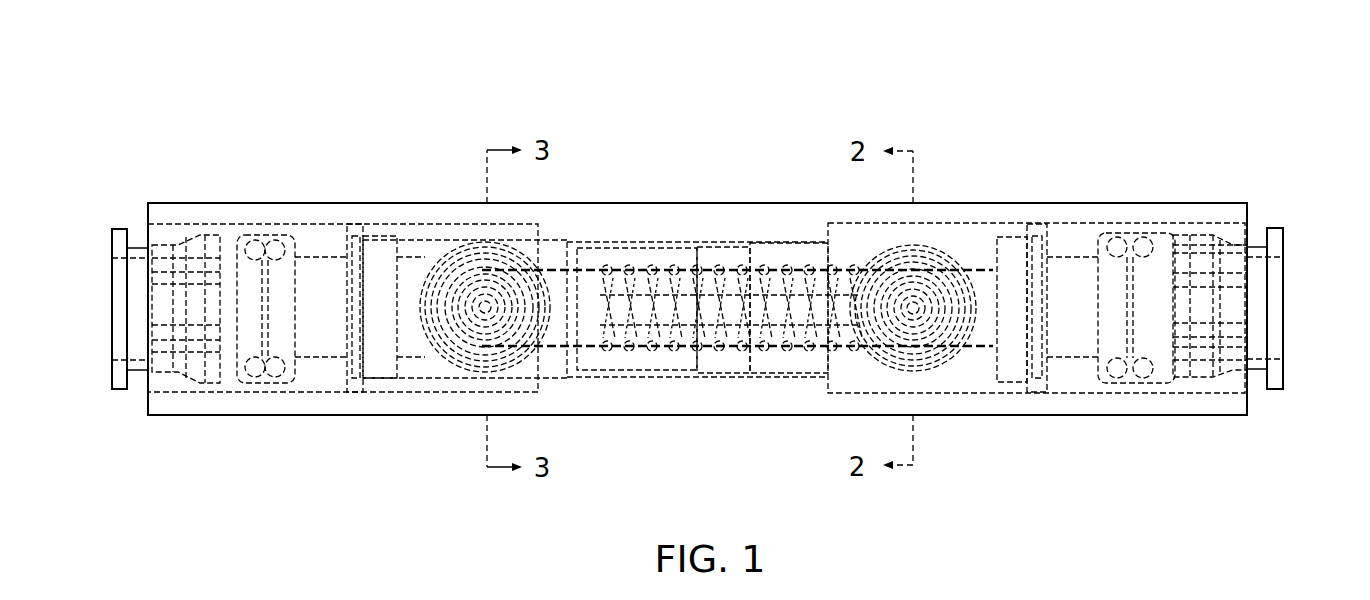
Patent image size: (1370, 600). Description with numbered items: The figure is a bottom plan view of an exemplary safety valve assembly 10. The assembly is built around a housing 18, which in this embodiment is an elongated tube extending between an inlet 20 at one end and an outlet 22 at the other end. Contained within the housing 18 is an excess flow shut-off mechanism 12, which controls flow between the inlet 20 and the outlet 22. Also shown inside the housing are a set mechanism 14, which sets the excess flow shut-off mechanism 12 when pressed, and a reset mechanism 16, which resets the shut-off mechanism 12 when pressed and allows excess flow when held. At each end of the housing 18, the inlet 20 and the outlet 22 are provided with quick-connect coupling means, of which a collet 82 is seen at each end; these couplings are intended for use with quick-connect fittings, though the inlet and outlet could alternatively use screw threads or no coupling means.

The safety valve assembly 10 is at (250, 70).
The excess flow shut-off mechanism 12 is at (687, 234).
The set mechanism 14 is at (956, 241).
The reset mechanism 16 is at (436, 246).
The housing 18 is at (264, 214).
The inlet 20 is at (147, 214).
The outlet 22 is at (1248, 211).
The collet 82 is at (112, 310).